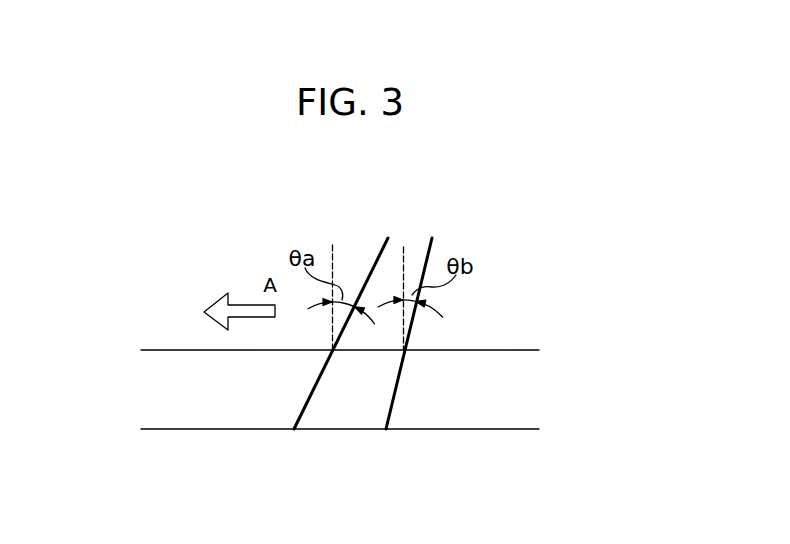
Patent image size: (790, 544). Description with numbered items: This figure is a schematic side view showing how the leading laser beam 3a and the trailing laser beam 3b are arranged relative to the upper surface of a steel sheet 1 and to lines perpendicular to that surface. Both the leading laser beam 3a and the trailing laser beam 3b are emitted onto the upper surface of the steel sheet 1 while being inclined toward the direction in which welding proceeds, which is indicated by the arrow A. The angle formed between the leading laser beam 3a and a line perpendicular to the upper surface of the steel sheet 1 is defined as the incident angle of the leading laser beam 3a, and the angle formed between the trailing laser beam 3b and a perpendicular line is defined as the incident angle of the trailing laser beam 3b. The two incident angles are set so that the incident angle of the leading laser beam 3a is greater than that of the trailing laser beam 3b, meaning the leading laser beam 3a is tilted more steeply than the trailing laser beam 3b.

The steel sheet 1 is at (192, 413).
The leading laser beam 3a is at (376, 262).
The trailing laser beam 3b is at (424, 262).